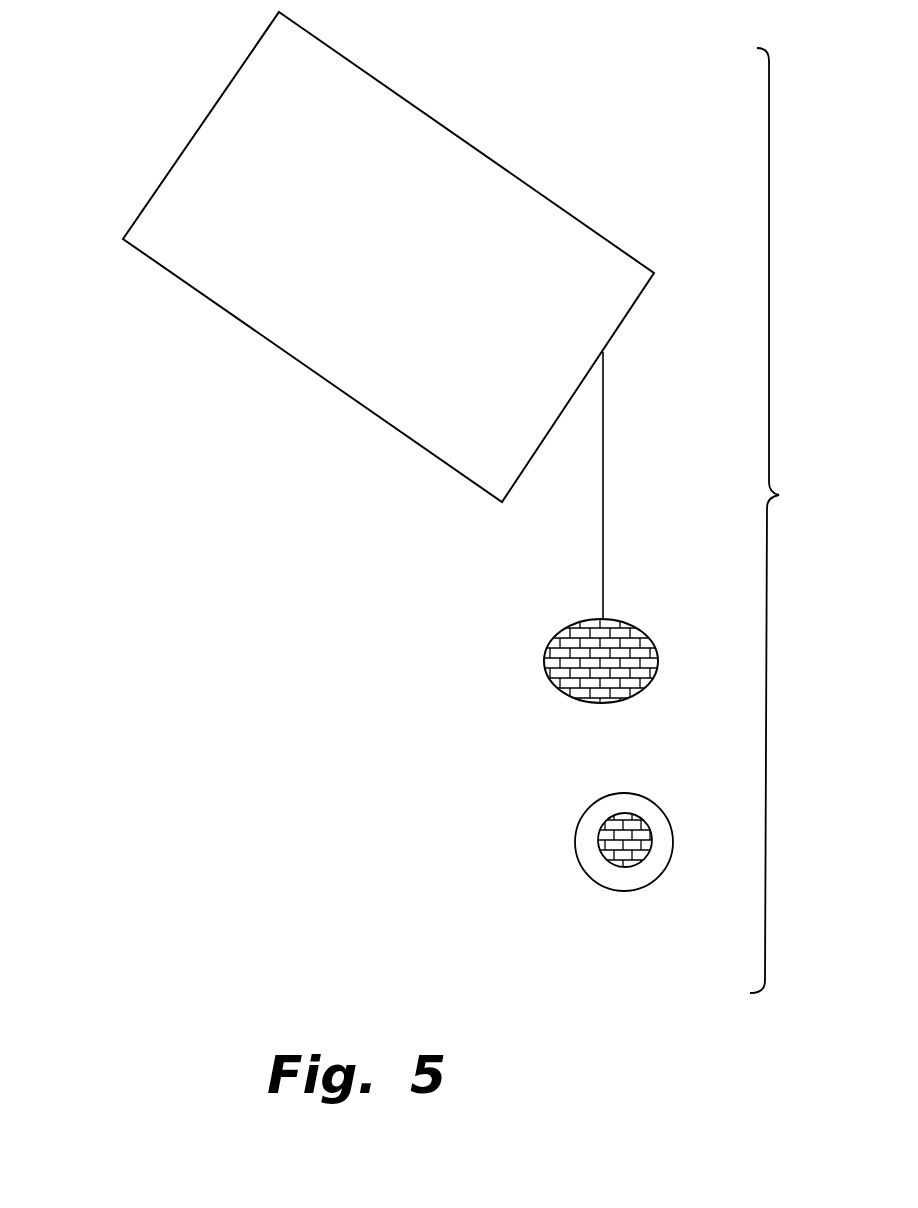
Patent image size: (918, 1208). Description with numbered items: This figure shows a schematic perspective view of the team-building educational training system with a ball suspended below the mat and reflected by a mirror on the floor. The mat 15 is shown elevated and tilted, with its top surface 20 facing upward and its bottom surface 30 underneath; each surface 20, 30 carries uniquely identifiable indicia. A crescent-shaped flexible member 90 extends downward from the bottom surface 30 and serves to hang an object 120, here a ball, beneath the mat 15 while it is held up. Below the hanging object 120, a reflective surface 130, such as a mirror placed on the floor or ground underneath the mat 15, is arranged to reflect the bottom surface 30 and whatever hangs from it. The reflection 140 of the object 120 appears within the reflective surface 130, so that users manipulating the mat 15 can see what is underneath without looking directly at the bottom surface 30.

The mat 15 is at (290, 181).
The top surface 20 is at (200, 244).
The bottom surface 30 is at (646, 327).
The crescent-shaped flexible member 90 is at (602, 523).
The object 120 is at (557, 690).
The reflective surface 130 is at (575, 852).
The reflection 140 is at (627, 856).